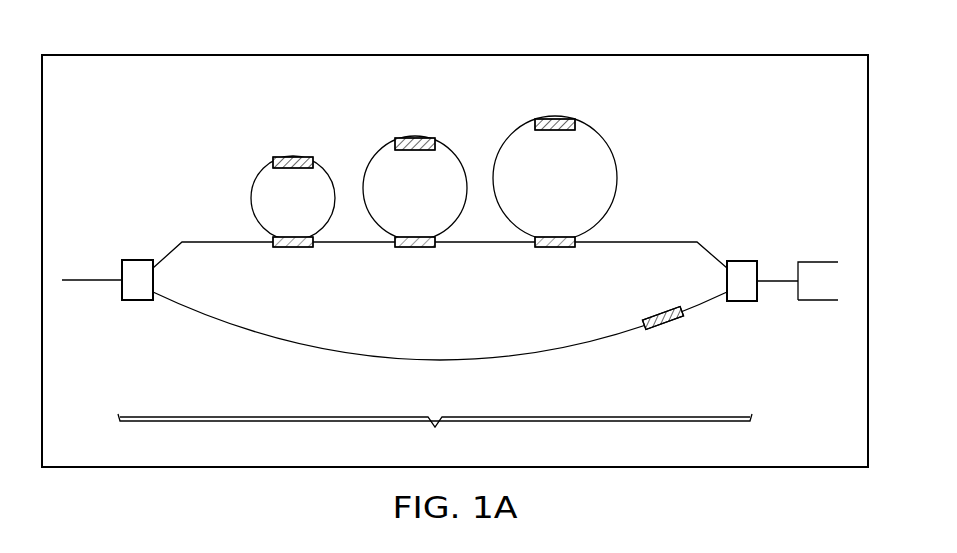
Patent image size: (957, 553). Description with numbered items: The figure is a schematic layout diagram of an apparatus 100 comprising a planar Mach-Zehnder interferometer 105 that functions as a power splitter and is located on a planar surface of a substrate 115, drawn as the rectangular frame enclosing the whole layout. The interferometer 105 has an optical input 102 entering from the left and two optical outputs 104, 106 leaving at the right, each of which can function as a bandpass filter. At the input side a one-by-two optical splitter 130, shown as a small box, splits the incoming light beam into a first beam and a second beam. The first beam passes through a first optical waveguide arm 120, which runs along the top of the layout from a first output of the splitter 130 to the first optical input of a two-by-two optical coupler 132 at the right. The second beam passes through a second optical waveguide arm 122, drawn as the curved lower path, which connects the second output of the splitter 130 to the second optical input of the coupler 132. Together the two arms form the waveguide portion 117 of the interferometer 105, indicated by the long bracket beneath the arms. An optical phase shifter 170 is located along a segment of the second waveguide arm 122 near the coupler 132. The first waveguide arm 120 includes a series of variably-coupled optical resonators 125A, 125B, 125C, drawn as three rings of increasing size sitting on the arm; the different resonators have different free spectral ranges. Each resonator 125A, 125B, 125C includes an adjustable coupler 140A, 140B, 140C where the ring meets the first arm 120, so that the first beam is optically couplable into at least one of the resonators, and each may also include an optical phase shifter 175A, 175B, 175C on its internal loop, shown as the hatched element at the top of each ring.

The apparatus 100 is at (738, 124).
The optical input 102 is at (90, 278).
The optical output 104 is at (818, 262).
The planar Mach-Zehnder interferometer 105 is at (232, 130).
The optical output 106 is at (818, 300).
The substrate 115 is at (617, 53).
The waveguide portion 117 is at (435, 434).
The first optical waveguide arm 120 is at (168, 240).
The second optical waveguide arm 122 is at (440, 362).
The optical resonator 125A is at (319, 215).
The optical resonator 125B is at (388, 207).
The optical resonator 125C is at (528, 197).
The 1x2 optical splitter 130 is at (135, 301).
The 2x2 optical coupler 132 is at (743, 302).
The adjustable coupler 140A is at (295, 248).
The adjustable coupler 140B is at (417, 248).
The adjustable coupler 140C is at (577, 248).
The optical phase shifter 170 is at (667, 326).
The optical phase shifter 175A is at (290, 157).
The optical phase shifter 175B is at (410, 138).
The optical phase shifter 175C is at (558, 120).